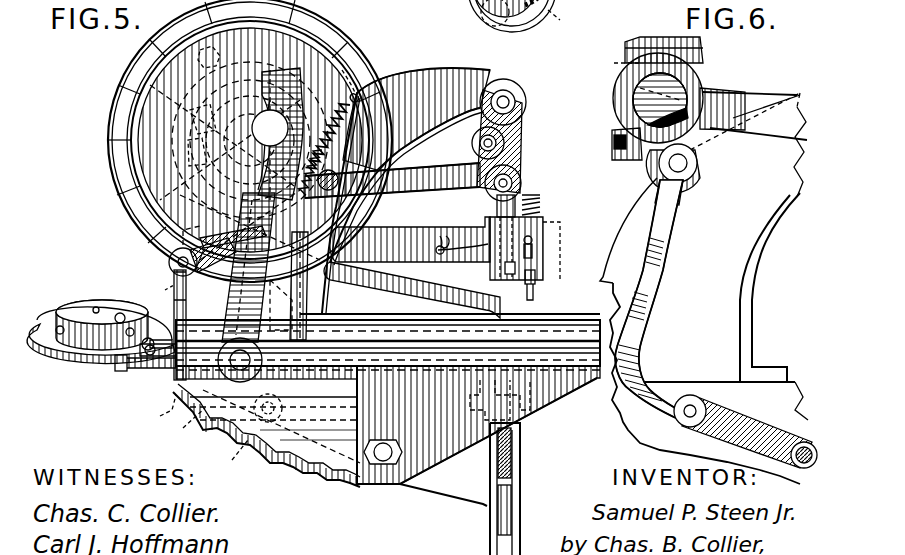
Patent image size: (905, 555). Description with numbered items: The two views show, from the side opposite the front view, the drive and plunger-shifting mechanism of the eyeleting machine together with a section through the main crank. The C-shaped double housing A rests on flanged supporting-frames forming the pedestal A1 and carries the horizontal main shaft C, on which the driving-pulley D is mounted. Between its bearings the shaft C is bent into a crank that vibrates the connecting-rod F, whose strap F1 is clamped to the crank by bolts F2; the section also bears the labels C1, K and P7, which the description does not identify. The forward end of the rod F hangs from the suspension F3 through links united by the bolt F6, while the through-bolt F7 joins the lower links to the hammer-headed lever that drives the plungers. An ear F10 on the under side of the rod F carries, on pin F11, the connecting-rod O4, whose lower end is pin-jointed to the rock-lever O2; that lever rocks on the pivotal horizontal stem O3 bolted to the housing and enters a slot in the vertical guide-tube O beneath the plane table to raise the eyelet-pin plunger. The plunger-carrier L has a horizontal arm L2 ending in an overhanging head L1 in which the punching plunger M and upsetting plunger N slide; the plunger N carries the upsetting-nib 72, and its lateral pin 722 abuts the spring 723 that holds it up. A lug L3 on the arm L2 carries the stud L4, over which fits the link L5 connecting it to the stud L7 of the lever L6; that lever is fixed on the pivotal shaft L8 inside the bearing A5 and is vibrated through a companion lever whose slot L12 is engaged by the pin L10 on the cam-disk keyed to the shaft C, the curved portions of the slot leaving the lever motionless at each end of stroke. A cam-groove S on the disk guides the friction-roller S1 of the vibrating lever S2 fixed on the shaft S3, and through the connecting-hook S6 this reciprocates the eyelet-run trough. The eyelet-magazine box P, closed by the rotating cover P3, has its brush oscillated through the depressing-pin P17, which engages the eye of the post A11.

In FIG. 5, the driving-pulley D is at (108, 134).
In FIG. 5, the main shaft C is at (135, 72).
In FIG. 6, the main shaft C is at (614, 110).
In FIG. 6, the clamp bore C1 is at (634, 92).
In FIG. 5, the cam-groove S is at (118, 183).
In FIG. 5, the friction-roller S1 is at (392, 191).
In FIG. 5, the vibrating lever S2 is at (168, 262).
In FIG. 5, the shaft S3 is at (152, 287).
In FIG. 5, the connecting-hook S6 is at (170, 338).
In FIG. 5, the plunger-carrier L is at (330, 52).
In FIG. 5, the overhanging head L1 is at (558, 251).
In FIG. 5, the horizontal arm L2 is at (392, 225).
In FIG. 5, the lug L3 is at (295, 286).
In FIG. 5, the stud L4 is at (281, 305).
In FIG. 5, the link L5 is at (250, 222).
In FIG. 5, the lever L6 is at (168, 325).
In FIG. 5, the laterally-extending stud L7 is at (178, 234).
In FIG. 5, the pivotal shaft L8 is at (182, 427).
In FIG. 5, the pin L10 is at (250, 95).
In FIG. 5, the slot L12 is at (363, 74).
In FIG. 5, the housing A is at (410, 78).
In FIG. 6, the housing A is at (760, 262).
In FIG. 5, the pedestal A1 is at (156, 412).
In FIG. 6, the pedestal A1 is at (640, 426).
In FIG. 5, the bearing A5 is at (220, 420).
In FIG. 5, the post A11 is at (142, 372).
In FIG. 5, the connecting-rod F is at (440, 146).
In FIG. 6, the connecting-rod F is at (770, 100).
In FIG. 6, the strap F1 is at (616, 74).
In FIG. 6, the bolts F2 is at (703, 60).
In FIG. 5, the suspension F3 is at (520, 92).
In FIG. 5, the bolt F6 is at (508, 140).
In FIG. 5, the through-bolt F7 is at (523, 180).
In FIG. 6, the ear F10 is at (697, 176).
In FIG. 6, the pin F11 is at (680, 200).
In FIG. 5, the plunger M is at (497, 207).
In FIG. 5, the plunger N is at (543, 238).
In FIG. 5, the upsetting-nib 72 is at (536, 294).
In FIG. 5, the laterally-projecting pin 722 is at (535, 230).
In FIG. 5, the spring 723 is at (476, 262).
In FIG. 5, the frame K is at (362, 314).
In FIG. 5, the vertical guide-tube O is at (490, 524).
In FIG. 5, the rock-lever O2 is at (448, 497).
In FIG. 6, the rock-lever O2 is at (742, 420).
In FIG. 5, the pivotal horizontal stem O3 is at (376, 466).
In FIG. 5, the connecting-rod O4 is at (235, 456).
In FIG. 6, the connecting-rod O4 is at (660, 280).
In FIG. 5, the eyelet-magazine box P is at (60, 306).
In FIG. 5, the rotating cover P3 is at (490, 18).
In FIG. 5, the disk rim P7 is at (564, 25).
In FIG. 5, the depressing-pin P17 is at (118, 370).